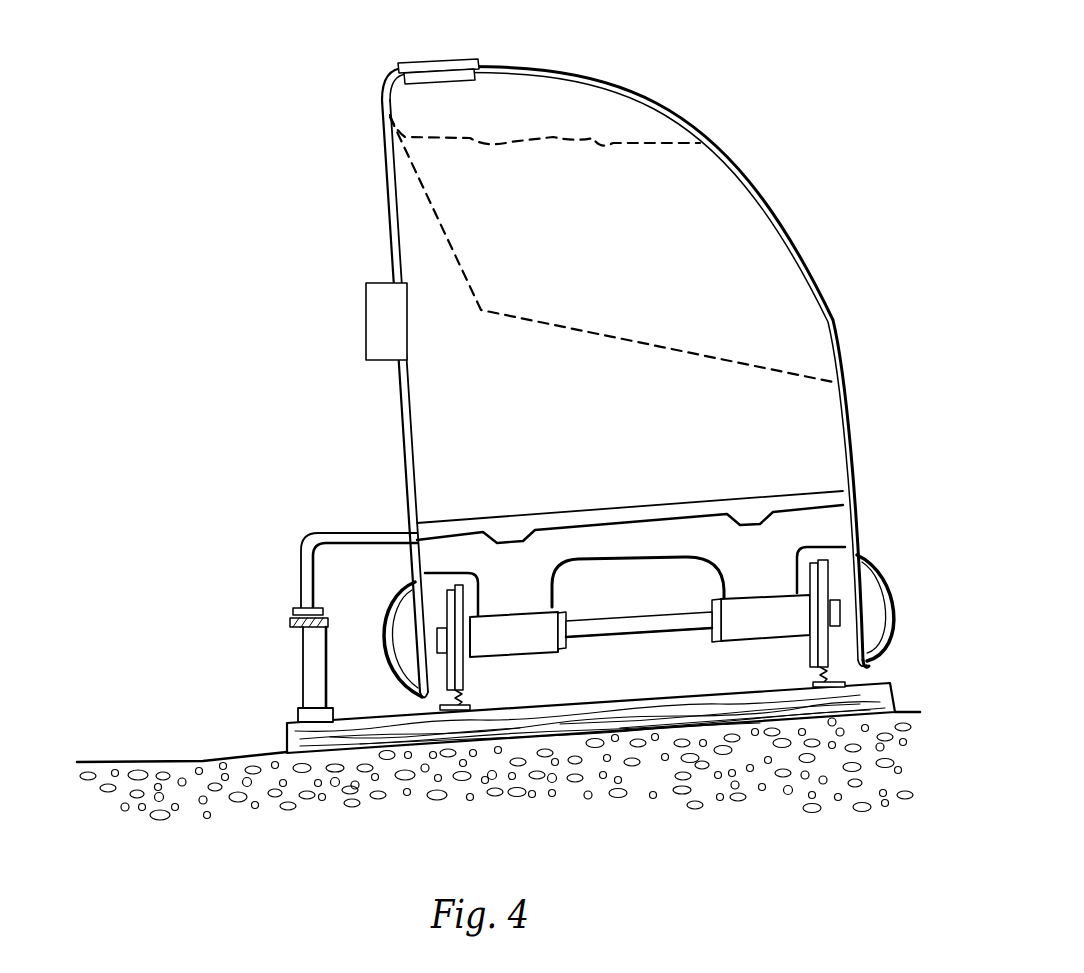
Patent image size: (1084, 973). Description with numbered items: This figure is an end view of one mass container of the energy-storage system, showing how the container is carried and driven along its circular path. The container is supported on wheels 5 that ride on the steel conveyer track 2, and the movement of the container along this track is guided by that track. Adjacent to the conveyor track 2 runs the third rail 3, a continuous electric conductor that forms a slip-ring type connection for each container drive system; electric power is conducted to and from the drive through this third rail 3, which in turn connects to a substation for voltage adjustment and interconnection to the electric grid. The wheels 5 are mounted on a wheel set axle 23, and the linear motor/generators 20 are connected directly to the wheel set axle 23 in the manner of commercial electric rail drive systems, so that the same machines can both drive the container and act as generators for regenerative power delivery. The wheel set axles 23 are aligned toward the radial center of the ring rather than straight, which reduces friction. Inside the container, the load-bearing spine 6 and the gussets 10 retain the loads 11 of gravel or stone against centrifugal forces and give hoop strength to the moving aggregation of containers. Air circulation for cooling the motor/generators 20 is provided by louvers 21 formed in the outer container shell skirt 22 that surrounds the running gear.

The steel conveyer track 2 is at (470, 695).
The third rail electric conductor 3 is at (292, 624).
The wheels 5 is at (465, 675).
The load-bearing spine 6 is at (366, 288).
The gussets 10 is at (643, 337).
The loads of gravel or stone 11 is at (596, 140).
The linear motor/generators 20 is at (543, 642).
The louvers 21 is at (417, 608).
The outer container shell skirt 22 is at (418, 632).
The wheel set axle 23 is at (637, 627).